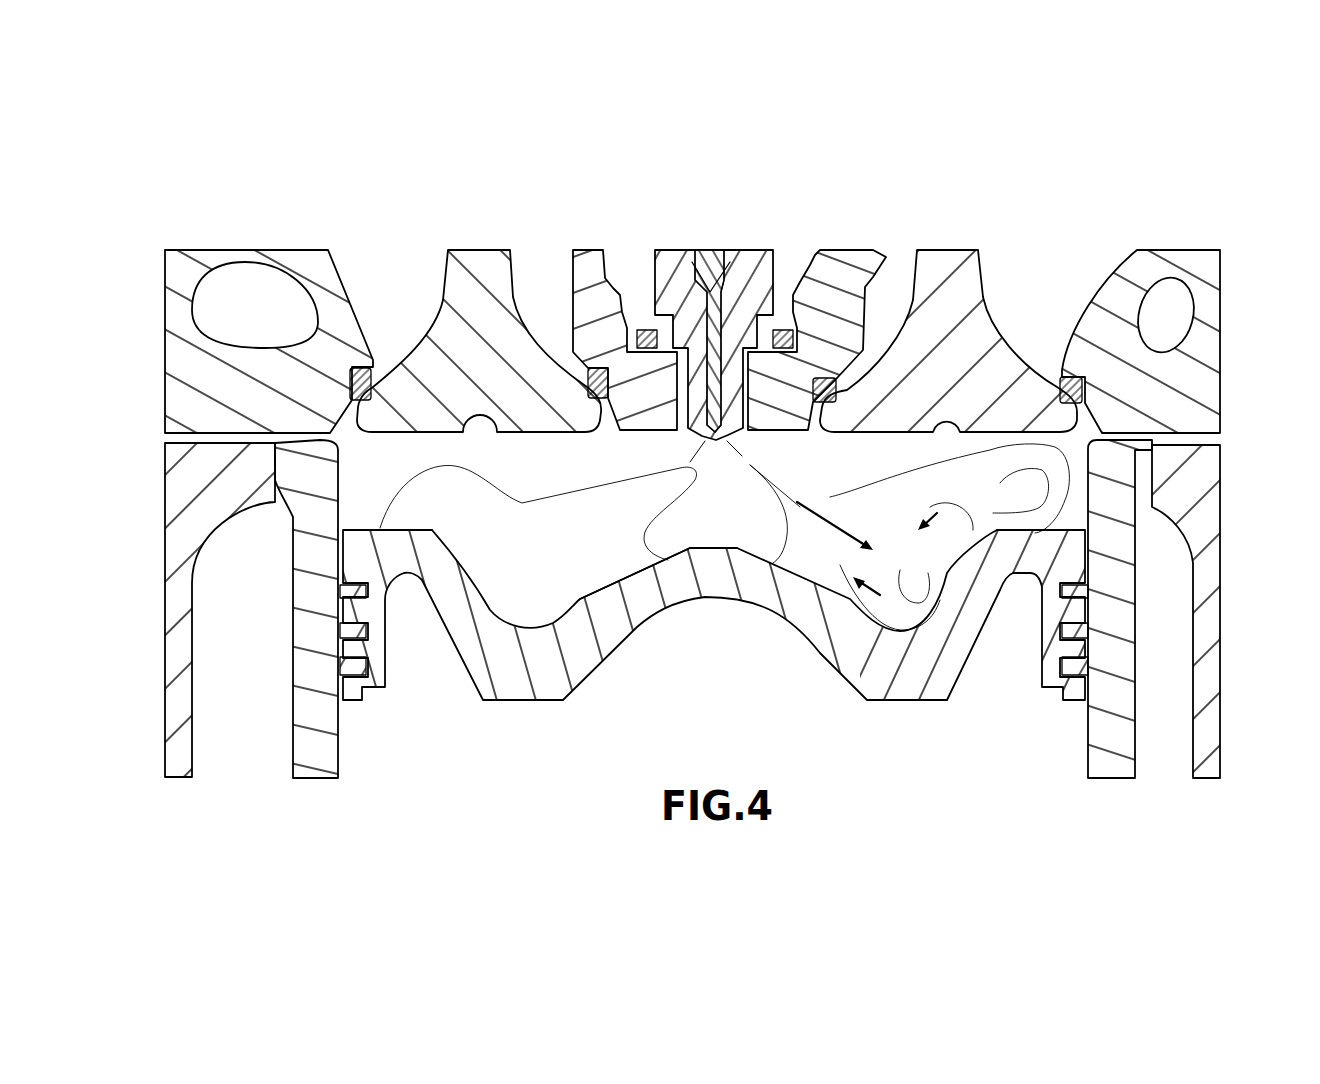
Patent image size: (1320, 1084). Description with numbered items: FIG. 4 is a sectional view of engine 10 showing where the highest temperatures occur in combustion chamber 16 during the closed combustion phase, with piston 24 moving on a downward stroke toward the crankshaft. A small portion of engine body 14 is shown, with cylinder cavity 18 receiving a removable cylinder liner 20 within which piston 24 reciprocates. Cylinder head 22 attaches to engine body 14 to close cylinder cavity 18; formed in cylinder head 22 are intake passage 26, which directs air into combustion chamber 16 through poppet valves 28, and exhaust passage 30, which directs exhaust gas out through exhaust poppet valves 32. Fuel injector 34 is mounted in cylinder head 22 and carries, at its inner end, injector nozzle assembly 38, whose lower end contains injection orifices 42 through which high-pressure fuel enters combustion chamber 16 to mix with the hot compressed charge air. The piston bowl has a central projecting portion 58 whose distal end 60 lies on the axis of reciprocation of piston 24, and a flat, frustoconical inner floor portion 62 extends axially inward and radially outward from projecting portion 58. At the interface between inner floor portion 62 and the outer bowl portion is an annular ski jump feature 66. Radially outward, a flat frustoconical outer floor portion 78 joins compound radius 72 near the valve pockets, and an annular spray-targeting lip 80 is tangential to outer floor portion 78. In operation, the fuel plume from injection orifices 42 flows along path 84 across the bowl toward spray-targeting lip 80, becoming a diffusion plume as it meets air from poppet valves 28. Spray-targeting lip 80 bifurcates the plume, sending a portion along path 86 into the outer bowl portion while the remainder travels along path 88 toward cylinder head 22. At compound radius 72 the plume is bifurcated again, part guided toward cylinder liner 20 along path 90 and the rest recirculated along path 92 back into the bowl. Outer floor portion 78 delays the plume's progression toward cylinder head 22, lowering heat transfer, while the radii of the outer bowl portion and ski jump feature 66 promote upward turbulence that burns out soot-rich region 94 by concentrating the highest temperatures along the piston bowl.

The engine 10 is at (1145, 176).
The engine body 14 is at (200, 732).
The combustion chamber 16 is at (563, 445).
The cylinder cavity 18 is at (345, 755).
The cylinder liner 20 is at (316, 780).
The cylinder head 22 is at (165, 386).
The piston 24 is at (378, 690).
The intake passage 26 is at (1046, 306).
The poppet valves 28 is at (953, 246).
The exhaust passage 30 is at (543, 268).
The exhaust poppet valves 32 is at (452, 248).
The fuel injector 34 is at (658, 232).
The injector nozzle assembly 38 is at (738, 245).
The injection orifices 42 is at (718, 441).
The projecting portion 58 is at (705, 585).
The distal end 60 is at (716, 545).
The inner floor portion 62 is at (640, 565).
The ski jump feature 66 is at (555, 592).
The compound radius 72 is at (445, 525).
The outer floor portion 78 is at (463, 558).
The spray-targeting lip 80 is at (495, 560).
The path 84 is at (840, 523).
The path 86 is at (932, 572).
The path 88 is at (925, 570).
The path 90 is at (1012, 477).
The path 92 is at (952, 510).
The soot-rich region 94 is at (630, 530).